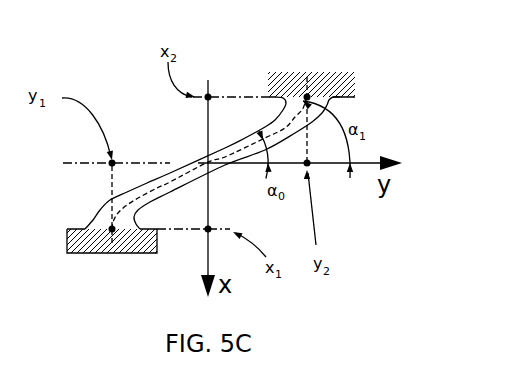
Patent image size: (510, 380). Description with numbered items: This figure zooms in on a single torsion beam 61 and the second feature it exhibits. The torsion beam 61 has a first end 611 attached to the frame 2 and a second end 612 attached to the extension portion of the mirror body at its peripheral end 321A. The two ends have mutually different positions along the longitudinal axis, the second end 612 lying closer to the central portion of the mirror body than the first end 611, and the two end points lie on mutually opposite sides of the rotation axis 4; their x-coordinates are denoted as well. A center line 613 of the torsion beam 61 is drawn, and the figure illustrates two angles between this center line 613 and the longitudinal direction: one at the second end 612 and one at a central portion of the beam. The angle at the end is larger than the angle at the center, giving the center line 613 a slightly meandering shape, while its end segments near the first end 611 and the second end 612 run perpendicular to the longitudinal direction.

The frame 2 is at (88, 262).
The rotation axis 4 is at (84, 153).
The torsion beam 61 is at (247, 133).
The first end of torsion beam 611 is at (111, 226).
The second end of torsion beam 612 is at (311, 87).
The center line 613 is at (186, 164).
The peripheral end of extension portion 321A is at (310, 61).